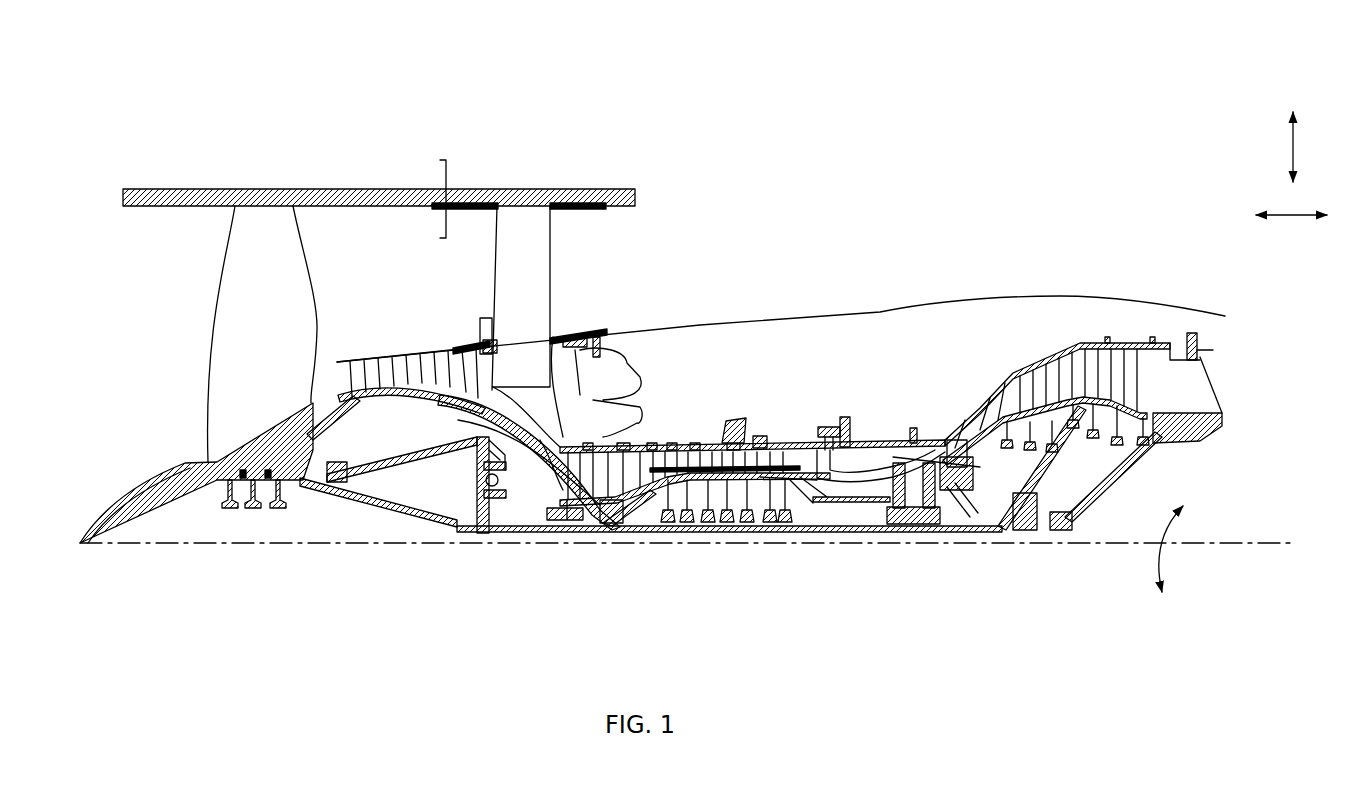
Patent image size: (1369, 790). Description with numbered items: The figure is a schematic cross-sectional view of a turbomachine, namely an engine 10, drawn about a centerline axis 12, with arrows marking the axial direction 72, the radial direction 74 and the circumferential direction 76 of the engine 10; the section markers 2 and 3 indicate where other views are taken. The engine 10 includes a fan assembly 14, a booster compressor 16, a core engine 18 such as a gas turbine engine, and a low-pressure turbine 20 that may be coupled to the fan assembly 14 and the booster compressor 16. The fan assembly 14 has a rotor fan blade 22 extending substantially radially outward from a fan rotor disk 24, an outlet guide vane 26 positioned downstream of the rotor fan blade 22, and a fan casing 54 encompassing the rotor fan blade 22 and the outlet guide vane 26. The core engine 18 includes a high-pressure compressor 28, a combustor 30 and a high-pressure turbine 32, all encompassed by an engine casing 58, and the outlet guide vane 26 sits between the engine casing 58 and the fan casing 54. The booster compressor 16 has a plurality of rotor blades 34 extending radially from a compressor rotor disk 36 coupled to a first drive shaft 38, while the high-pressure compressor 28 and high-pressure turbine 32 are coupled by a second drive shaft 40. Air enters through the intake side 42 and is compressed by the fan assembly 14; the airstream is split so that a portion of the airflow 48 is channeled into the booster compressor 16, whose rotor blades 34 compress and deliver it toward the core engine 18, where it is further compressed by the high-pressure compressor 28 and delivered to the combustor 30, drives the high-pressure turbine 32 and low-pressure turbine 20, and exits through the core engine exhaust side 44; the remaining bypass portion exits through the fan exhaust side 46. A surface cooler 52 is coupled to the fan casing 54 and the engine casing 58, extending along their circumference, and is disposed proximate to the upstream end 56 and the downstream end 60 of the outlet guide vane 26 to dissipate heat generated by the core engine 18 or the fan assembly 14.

The engine 10 is at (1172, 68).
The centerline axis 12 is at (256, 548).
The fan assembly 14 is at (200, 311).
The booster compressor 16 is at (378, 365).
The core engine 18 is at (808, 370).
The low-pressure turbine 20 is at (1125, 344).
The rotor fan blade 22 is at (292, 272).
The fan rotor disk 24 is at (220, 472).
The outlet guide vane 26 is at (545, 292).
The high-pressure compressor 28 is at (608, 460).
The combustor 30 is at (863, 455).
The high-pressure turbine 32 is at (900, 523).
The rotor blades 34 is at (368, 362).
The compressor rotor disk 36 is at (362, 404).
The first drive shaft 38 is at (481, 535).
The second drive shaft 40 is at (852, 512).
The intake side 42 is at (122, 240).
The core engine exhaust side 44 is at (1224, 352).
The fan exhaust side 46 is at (567, 236).
The airflow 48 is at (524, 451).
The surface cooler 52 is at (560, 210).
The fan casing 54 is at (189, 195).
The upstream end 56 is at (498, 205).
The engine casing 58 is at (706, 318).
The downstream end 60 is at (552, 205).
The axial direction 72 is at (1295, 218).
The radial direction 74 is at (1296, 146).
The circumferential direction 76 is at (1186, 525).
The section line 2 is at (438, 163).
The section line 3 is at (490, 322).